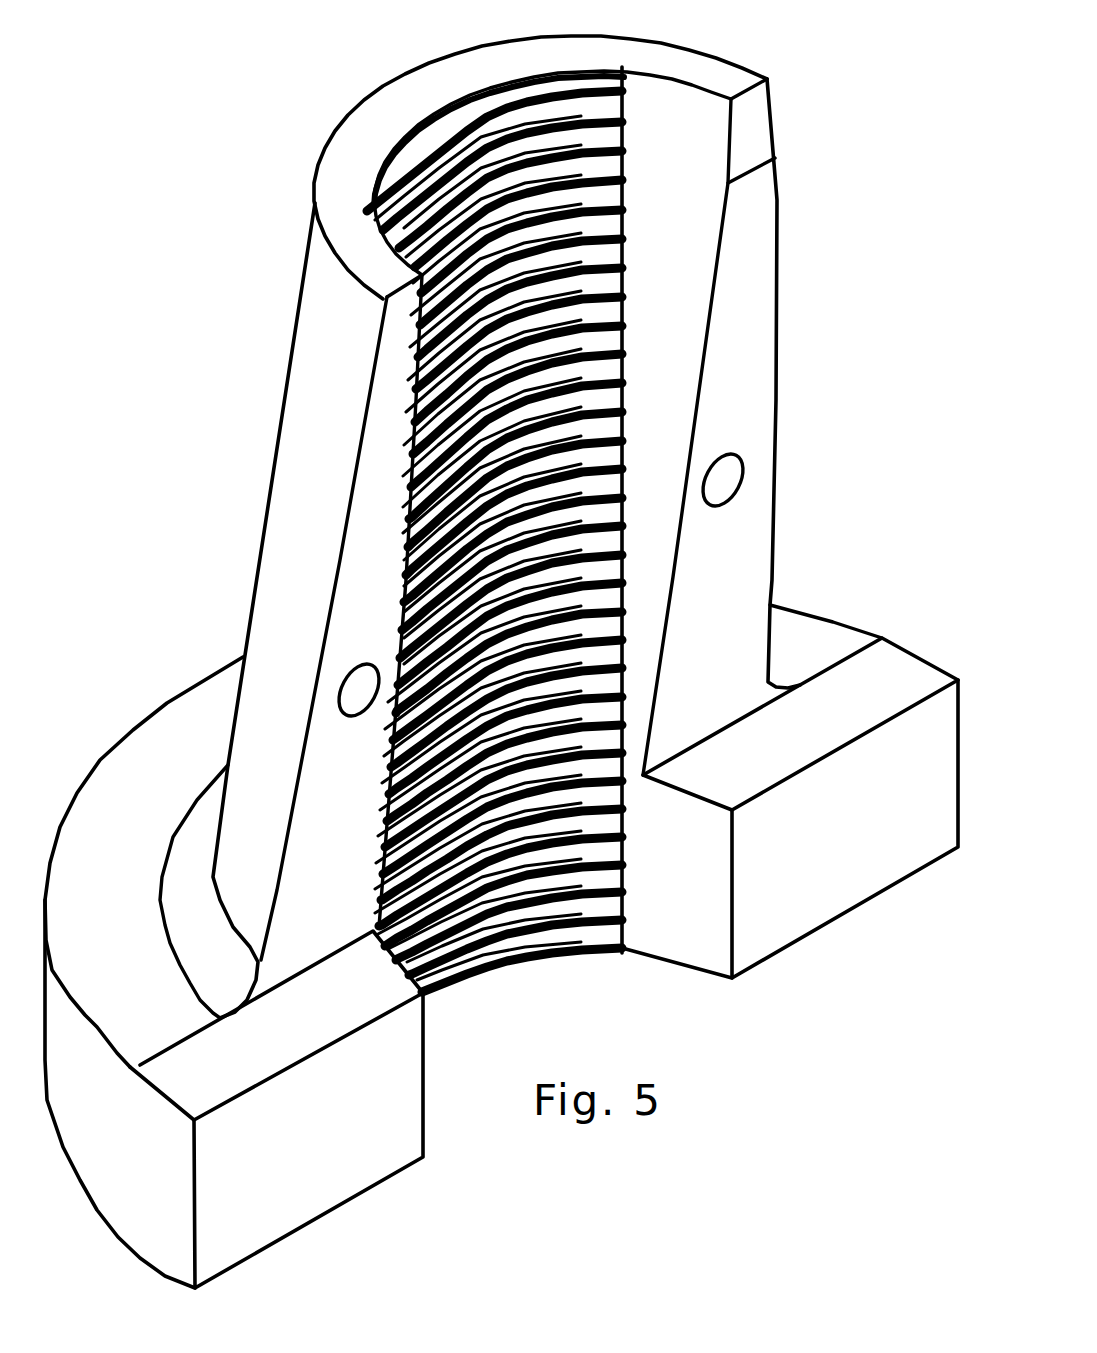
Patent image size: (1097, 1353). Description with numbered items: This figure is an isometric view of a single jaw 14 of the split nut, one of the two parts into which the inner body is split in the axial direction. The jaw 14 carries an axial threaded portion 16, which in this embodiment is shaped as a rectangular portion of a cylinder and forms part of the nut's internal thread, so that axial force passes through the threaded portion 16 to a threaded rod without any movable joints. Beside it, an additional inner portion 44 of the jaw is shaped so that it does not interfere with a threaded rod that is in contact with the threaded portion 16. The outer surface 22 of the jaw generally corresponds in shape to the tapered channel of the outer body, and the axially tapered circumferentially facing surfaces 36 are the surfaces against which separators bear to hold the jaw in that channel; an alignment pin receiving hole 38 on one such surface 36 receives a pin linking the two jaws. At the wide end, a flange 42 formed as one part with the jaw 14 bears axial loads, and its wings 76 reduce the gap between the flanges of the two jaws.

The jaw 14 is at (816, 82).
The axial thread portion 16 is at (447, 138).
The outer surface 22 is at (319, 510).
The axially tapered circumferentially facing surface 36 is at (347, 883).
The alignment pin receiving hole 38 is at (717, 490).
The flange 42 is at (145, 793).
The additional inner portion 44 is at (690, 277).
The wings 76 is at (793, 870).